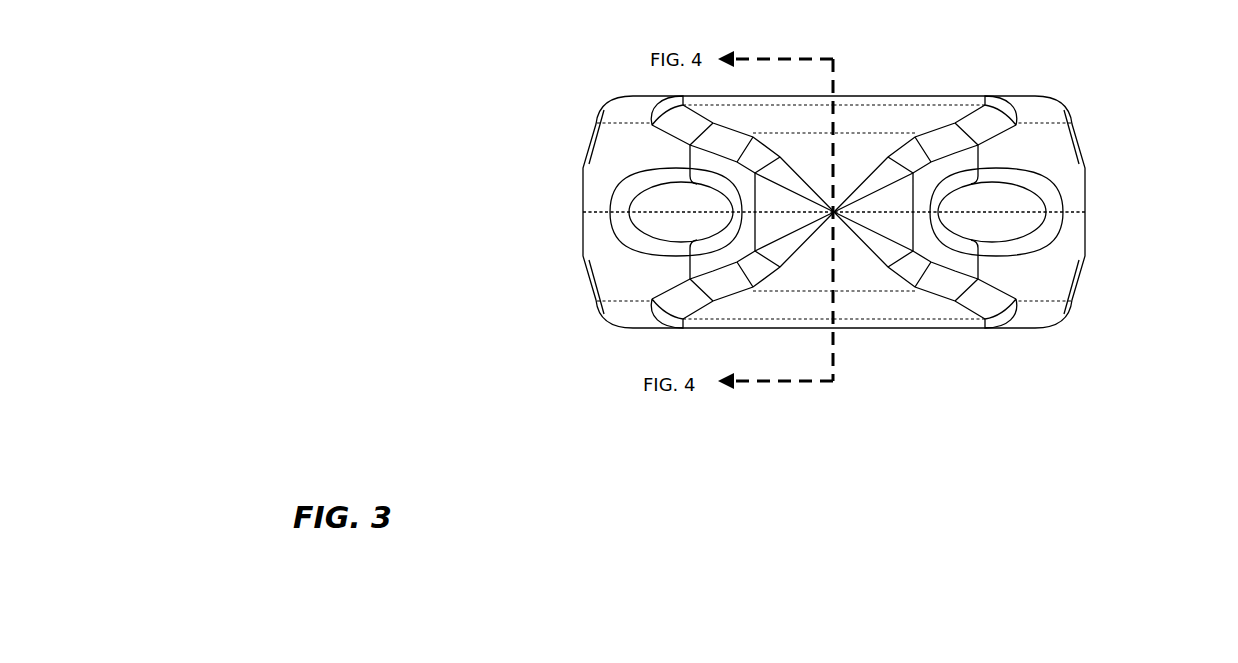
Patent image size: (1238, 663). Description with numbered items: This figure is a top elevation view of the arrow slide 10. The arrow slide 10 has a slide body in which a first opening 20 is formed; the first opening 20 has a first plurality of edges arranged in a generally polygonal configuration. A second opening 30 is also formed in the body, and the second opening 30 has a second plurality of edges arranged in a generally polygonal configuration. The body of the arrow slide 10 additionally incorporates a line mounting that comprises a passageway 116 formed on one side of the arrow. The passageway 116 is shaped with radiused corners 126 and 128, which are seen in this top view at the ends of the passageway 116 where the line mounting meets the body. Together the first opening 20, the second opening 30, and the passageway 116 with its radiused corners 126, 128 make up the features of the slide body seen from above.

The arrow slide 10 is at (835, 226).
The first opening 20 is at (888, 328).
The second opening 30 is at (852, 98).
The passageway 116 is at (636, 228).
The radiused corner 126 is at (1046, 196).
The radiused corner 128 is at (618, 196).